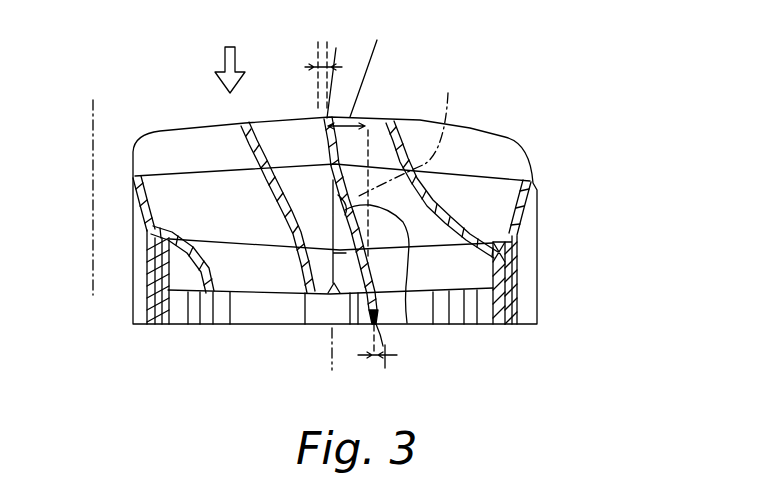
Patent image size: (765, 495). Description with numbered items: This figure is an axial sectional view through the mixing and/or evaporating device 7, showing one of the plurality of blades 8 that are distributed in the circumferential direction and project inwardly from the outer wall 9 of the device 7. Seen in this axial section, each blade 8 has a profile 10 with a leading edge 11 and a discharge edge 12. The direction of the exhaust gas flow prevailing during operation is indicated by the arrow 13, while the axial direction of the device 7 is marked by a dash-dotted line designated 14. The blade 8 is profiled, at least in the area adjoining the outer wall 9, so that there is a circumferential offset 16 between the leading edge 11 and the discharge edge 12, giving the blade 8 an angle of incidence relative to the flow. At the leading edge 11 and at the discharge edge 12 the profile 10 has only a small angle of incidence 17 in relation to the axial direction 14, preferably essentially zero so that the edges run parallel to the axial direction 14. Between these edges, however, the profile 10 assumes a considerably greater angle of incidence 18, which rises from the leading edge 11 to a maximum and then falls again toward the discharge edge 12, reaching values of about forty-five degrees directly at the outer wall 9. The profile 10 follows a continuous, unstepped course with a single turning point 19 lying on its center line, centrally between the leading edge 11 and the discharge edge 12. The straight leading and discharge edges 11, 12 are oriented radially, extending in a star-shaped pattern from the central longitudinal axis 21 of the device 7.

The mixing and/or evaporating device 7 is at (573, 107).
The blade 8 is at (188, 148).
The outer wall 9 is at (523, 300).
The profile 10 is at (407, 323).
The leading edge 11 is at (344, 74).
The discharge edge 12 is at (379, 377).
The arrow 13 is at (228, 58).
The axial direction 14 is at (92, 210).
The offset 16 is at (373, 65).
The angle of incidence 17 is at (305, 68).
The angle of incidence 18 is at (350, 203).
The turning point 19 is at (414, 129).
The central longitudinal axis 21 is at (332, 363).